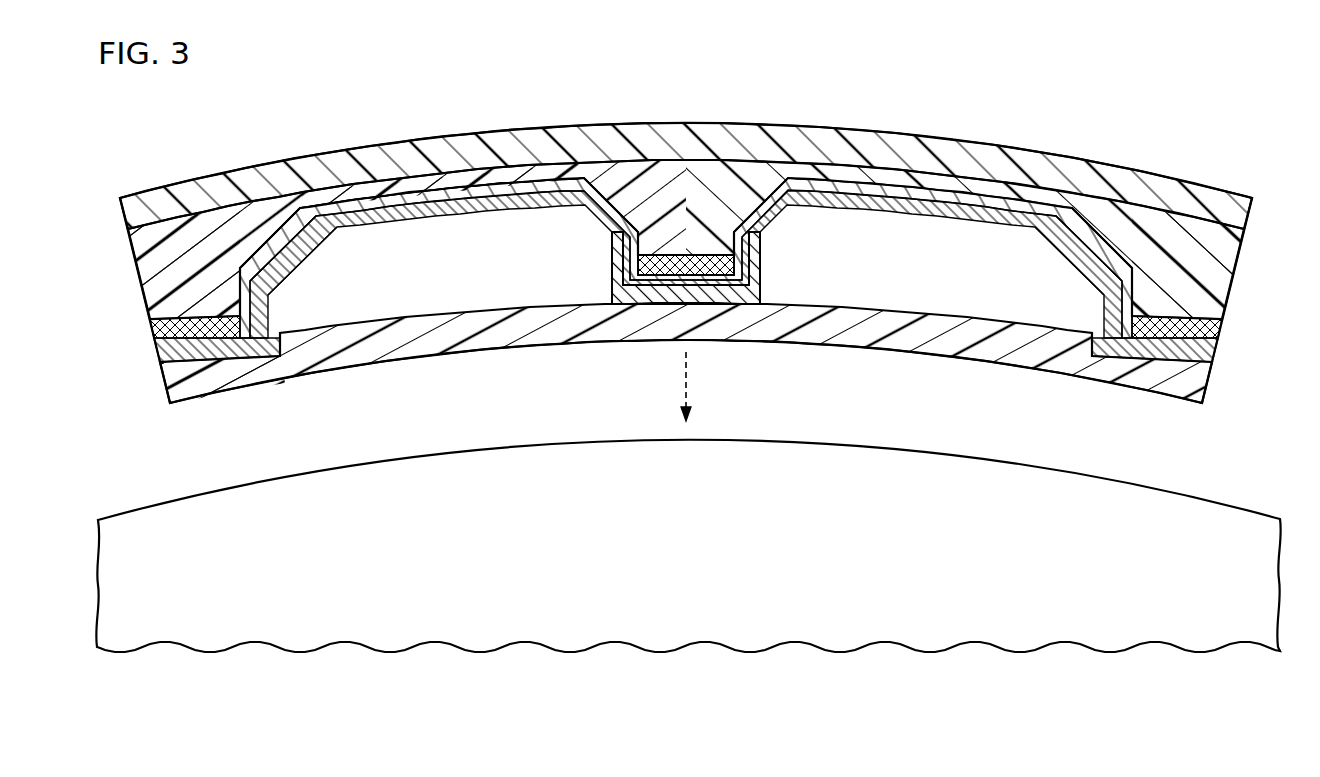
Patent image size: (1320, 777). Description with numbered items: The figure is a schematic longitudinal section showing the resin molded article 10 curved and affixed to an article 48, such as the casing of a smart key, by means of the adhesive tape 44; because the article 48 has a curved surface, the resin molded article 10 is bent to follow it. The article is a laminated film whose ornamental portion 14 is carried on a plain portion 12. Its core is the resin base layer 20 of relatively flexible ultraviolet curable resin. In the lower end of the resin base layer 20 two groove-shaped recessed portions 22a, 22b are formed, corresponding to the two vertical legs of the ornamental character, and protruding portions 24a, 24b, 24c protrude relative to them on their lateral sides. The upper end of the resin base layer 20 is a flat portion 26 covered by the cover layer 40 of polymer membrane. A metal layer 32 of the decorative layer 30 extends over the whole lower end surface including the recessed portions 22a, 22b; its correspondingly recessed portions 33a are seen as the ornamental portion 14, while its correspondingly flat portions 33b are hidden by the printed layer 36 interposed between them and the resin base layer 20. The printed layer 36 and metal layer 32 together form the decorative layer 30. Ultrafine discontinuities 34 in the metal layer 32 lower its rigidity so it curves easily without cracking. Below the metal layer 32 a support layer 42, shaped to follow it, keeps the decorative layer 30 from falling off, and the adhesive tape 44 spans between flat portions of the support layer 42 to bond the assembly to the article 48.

The resin molded article 10 is at (1223, 175).
The resin base layer 20 is at (233, 224).
The flat portion 26 is at (368, 192).
The protruding portion 24a is at (187, 300).
The protruding portion 24b is at (640, 243).
The protruding portion 24c is at (1204, 297).
The cover layer 40 is at (531, 142).
The correspondingly recessed portion 33a is at (425, 190).
The ornamental portion 14 is at (439, 223).
The discontinuities 34 is at (402, 233).
The recessed portion 22a is at (313, 262).
The recessed portion 22b is at (896, 198).
The decorative layer 30 is at (782, 78).
The printed layer 36 is at (677, 254).
The plain portion 12 is at (686, 265).
The metal layer 32 is at (766, 190).
The correspondingly flat portion 33b is at (193, 340).
The support layer 42 is at (285, 325).
The adhesive tape 44 is at (264, 380).
The article 48 is at (748, 446).